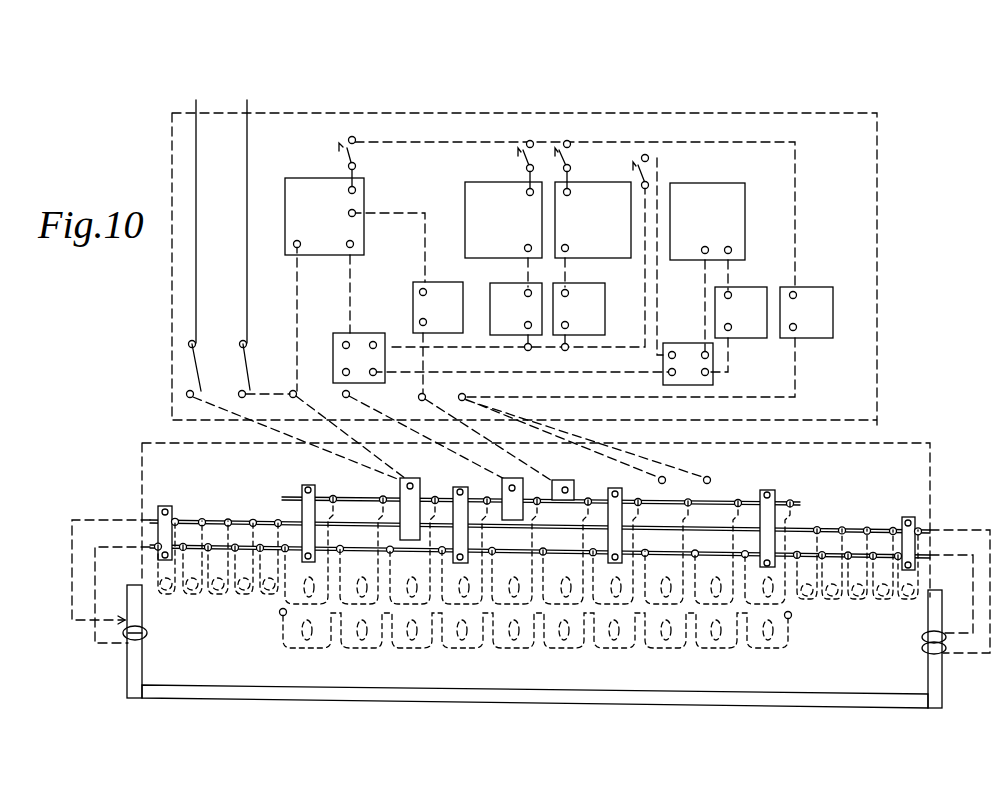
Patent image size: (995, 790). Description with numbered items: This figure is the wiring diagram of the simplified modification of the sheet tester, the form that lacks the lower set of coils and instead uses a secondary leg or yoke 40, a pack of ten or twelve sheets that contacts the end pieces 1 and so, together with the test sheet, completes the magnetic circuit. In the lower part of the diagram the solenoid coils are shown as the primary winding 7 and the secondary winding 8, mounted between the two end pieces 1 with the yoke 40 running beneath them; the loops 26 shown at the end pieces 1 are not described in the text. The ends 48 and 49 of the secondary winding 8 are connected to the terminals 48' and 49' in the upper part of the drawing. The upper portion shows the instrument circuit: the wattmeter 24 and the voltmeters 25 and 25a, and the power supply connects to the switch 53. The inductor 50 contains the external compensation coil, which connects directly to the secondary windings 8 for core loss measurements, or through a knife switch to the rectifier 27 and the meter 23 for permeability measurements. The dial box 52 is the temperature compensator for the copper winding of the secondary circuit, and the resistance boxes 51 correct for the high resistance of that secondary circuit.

The wattmeter 24 is at (305, 190).
The voltmeter 25 is at (548, 85).
The voltmeter 25a is at (650, 90).
The meter 23 is at (775, 93).
The resistance box 51 is at (448, 292).
The inductor 50 is at (357, 345).
The rectifier 27 is at (674, 350).
The dial box 52 is at (810, 300).
The switch 53 is at (243, 364).
The secondary leg or yoke 40 is at (535, 717).
The end piece 1 is at (131, 660).
The binding ring 26 is at (143, 636).
The primary winding 7 is at (293, 590).
The secondary winding 8 is at (307, 617).
The end of secondary winding 48 is at (298, 604).
The end of secondary winding 49 is at (804, 620).
The terminal 48' is at (657, 489).
The terminal 49' is at (714, 491).